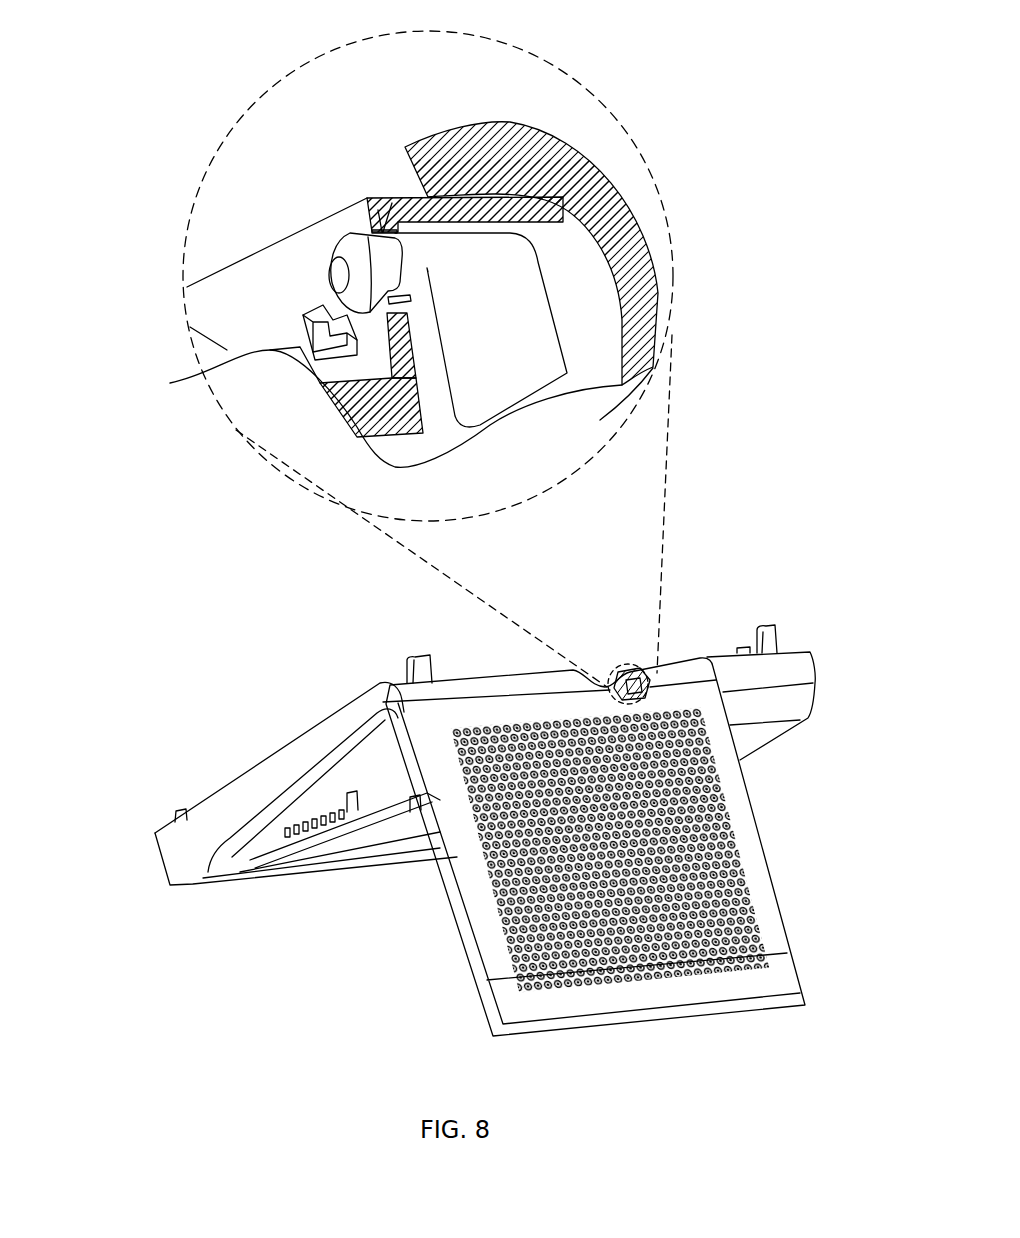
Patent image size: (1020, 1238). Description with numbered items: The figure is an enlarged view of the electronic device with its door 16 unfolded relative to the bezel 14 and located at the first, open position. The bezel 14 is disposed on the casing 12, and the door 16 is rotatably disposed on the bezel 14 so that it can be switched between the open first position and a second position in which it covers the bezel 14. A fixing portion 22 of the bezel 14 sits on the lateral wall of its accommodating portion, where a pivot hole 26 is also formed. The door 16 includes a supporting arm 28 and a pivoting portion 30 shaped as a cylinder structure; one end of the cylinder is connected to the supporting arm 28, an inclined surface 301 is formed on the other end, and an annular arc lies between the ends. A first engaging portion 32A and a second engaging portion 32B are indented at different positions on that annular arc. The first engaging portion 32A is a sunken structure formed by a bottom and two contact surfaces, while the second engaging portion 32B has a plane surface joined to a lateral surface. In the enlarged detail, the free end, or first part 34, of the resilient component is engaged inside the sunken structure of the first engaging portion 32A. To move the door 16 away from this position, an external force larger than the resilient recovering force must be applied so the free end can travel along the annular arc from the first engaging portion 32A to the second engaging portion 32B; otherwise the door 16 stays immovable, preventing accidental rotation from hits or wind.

The casing 12 is at (375, 410).
The bezel 14 is at (637, 188).
The door 16 is at (487, 947).
The fixing portion 22 is at (303, 325).
The pivot hole 26 is at (385, 215).
The supporting arm 28 is at (633, 667).
The pivoting portion 30 is at (507, 313).
The inclined surface 301 is at (345, 250).
The first engaging portion 32A is at (413, 347).
The second engaging portion 32B is at (380, 260).
The first part 34 is at (300, 347).